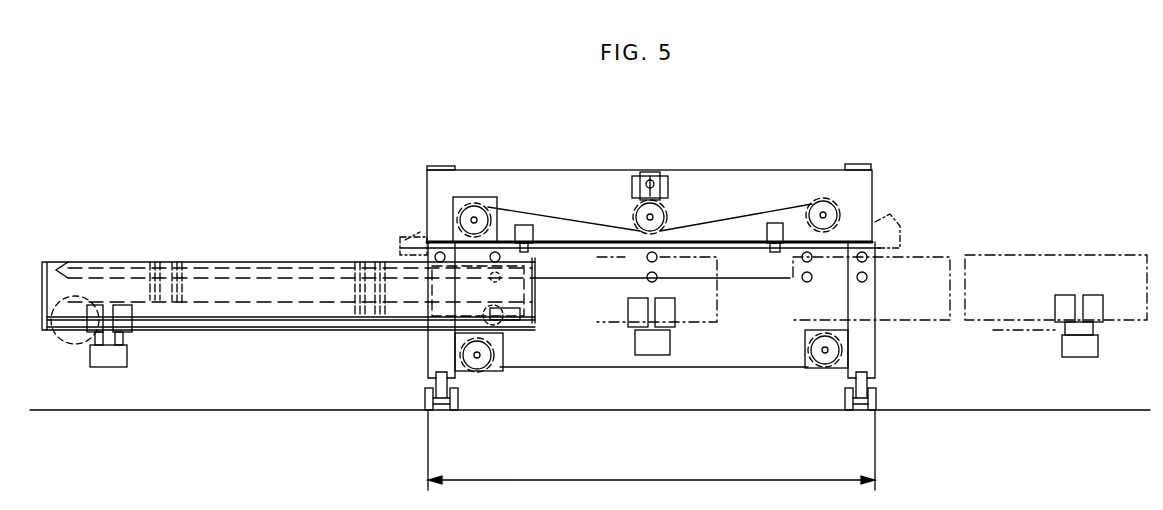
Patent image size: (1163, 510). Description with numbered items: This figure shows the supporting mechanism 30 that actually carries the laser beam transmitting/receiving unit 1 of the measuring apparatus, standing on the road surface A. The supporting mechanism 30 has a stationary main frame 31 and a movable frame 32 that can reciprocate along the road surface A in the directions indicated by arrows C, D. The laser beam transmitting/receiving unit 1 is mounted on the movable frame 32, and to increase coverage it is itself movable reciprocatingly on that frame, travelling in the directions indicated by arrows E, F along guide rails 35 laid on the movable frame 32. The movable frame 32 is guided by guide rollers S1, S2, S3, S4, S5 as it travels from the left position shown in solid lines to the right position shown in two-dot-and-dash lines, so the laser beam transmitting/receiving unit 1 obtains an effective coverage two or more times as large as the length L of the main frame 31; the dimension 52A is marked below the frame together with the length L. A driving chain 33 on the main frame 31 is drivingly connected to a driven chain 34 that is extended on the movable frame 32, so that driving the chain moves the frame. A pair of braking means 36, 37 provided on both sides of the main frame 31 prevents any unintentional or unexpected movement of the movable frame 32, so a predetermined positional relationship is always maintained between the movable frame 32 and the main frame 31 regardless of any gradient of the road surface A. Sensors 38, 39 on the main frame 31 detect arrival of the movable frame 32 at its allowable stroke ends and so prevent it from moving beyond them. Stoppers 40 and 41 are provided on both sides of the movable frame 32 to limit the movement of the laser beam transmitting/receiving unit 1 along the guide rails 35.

The laser beam transmitting/receiving unit 1 is at (120, 362).
The supporting mechanism 30 is at (682, 179).
The main frame 31 is at (810, 174).
The movable frame 32 is at (282, 262).
The driving chain 33 is at (566, 368).
The driven chain 34 is at (378, 331).
The guide rails 35 is at (346, 323).
The braking means 36 is at (401, 237).
The braking means 37 is at (890, 216).
The sensor 38 is at (566, 232).
The sensor 39 is at (772, 223).
The stopper 40 is at (76, 330).
The stopper 41 is at (502, 322).
The dimension 52A is at (651, 450).
The guide roller S1 is at (427, 240).
The guide roller S2 is at (496, 252).
The guide roller S3 is at (653, 252).
The guide roller S4 is at (806, 282).
The guide roller S5 is at (863, 282).
The road surface A is at (968, 410).
The arrow C is at (602, 292).
The arrow D is at (604, 300).
The arrow E is at (202, 347).
The arrow F is at (202, 358).
The length of main frame L is at (651, 475).